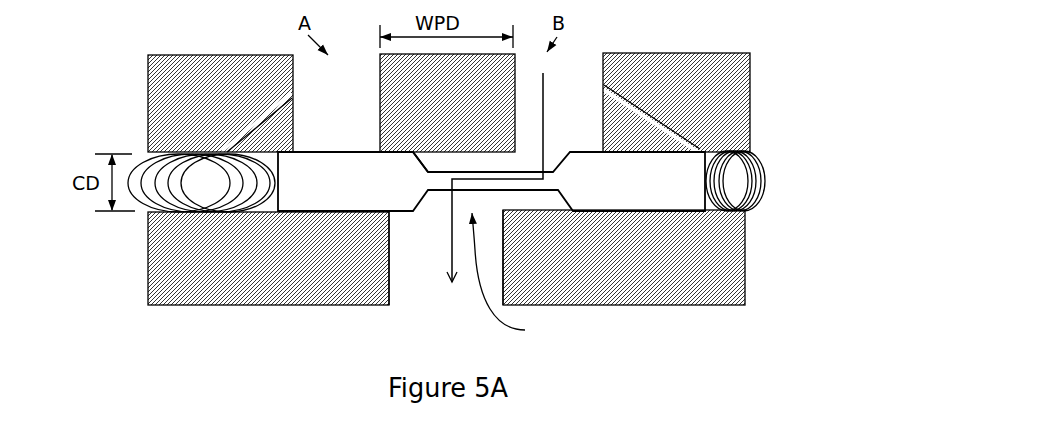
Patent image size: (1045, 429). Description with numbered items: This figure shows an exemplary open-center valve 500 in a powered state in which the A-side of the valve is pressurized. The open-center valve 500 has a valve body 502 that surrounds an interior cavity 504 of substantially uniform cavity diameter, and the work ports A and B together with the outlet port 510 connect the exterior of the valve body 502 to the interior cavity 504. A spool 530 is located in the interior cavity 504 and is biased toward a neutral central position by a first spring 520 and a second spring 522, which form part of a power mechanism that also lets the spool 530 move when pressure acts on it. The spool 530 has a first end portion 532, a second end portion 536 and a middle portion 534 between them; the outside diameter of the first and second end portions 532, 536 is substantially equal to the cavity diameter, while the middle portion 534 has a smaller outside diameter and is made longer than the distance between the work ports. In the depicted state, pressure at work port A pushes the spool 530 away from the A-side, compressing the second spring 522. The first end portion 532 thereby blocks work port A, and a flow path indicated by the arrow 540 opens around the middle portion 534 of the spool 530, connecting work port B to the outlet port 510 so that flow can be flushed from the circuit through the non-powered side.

The open-center valve 500 is at (102, 82).
The valve body 502 is at (152, 267).
The interior cavity 504 is at (523, 280).
The outlet port 510 is at (413, 308).
The first spring 520 is at (143, 213).
The second spring 522 is at (790, 197).
The spool 530 is at (361, 190).
The first end portion 532 is at (348, 152).
The middle portion 534 is at (443, 190).
The second end portion 536 is at (596, 152).
The arrow 540 is at (554, 97).